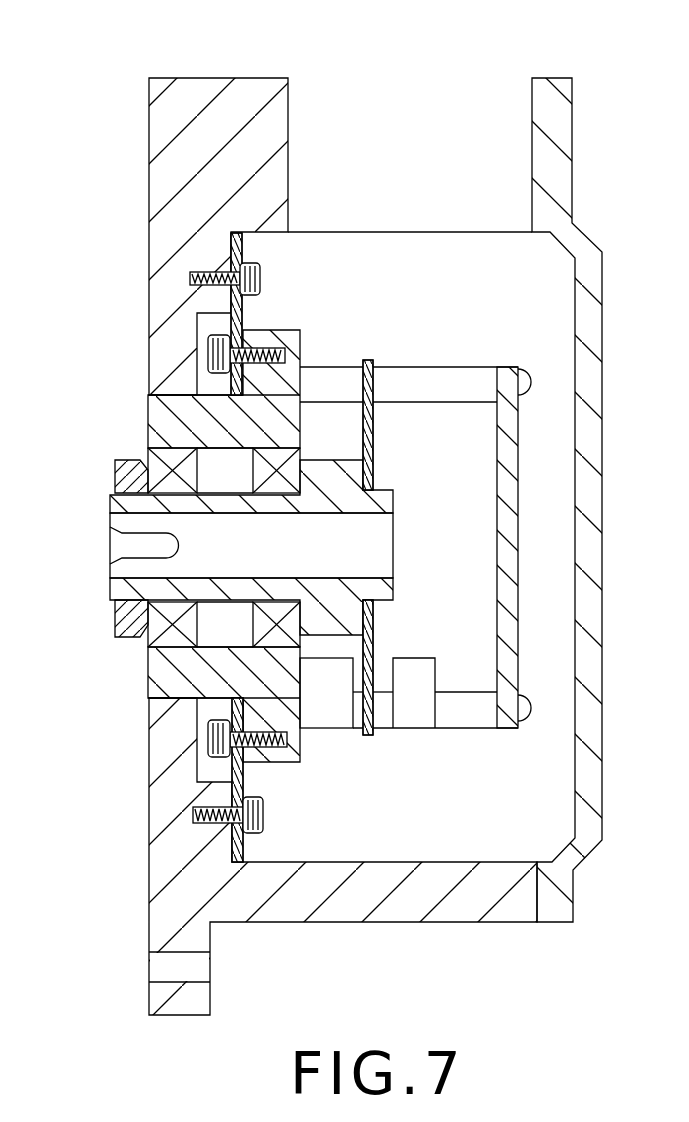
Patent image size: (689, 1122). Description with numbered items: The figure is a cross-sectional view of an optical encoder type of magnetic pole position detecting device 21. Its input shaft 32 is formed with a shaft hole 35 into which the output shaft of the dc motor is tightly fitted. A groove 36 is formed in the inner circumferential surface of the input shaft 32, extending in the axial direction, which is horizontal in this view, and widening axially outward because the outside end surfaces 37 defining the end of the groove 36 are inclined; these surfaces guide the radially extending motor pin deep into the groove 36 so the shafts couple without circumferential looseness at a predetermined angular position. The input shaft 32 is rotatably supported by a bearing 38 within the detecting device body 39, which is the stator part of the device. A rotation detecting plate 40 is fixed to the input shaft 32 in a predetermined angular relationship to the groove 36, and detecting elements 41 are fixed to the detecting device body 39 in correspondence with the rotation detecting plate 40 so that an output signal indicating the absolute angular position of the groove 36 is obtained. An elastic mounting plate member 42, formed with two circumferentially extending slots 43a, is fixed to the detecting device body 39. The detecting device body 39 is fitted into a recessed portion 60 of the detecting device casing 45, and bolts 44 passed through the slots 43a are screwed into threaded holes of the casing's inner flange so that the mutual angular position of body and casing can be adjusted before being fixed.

The magnetic pole position detecting device 21 is at (96, 218).
The detecting device casing 45 is at (212, 95).
The recessed portion 60 is at (248, 237).
The elastic mounting plate member 42 is at (243, 298).
The detecting device body 39 is at (286, 324).
The input shaft 32 is at (243, 498).
The shaft hole 35 is at (353, 514).
The groove 36 is at (172, 560).
The outside end surfaces 37 is at (110, 563).
The bearing 38 is at (157, 634).
The rotation detecting plate 40 is at (373, 632).
The detecting elements 41 is at (335, 718).
The bolts 44 is at (265, 815).
The circumferentially extending slots 43a is at (233, 825).